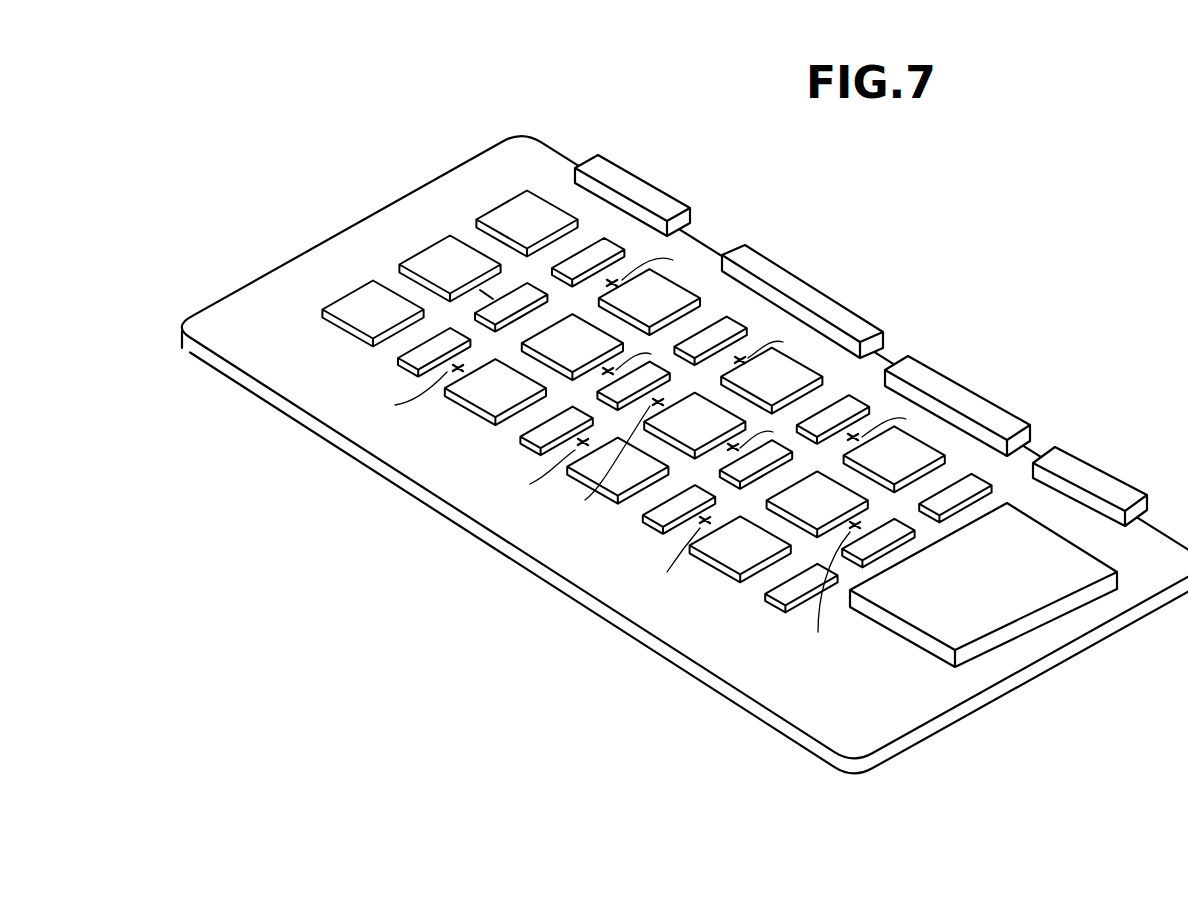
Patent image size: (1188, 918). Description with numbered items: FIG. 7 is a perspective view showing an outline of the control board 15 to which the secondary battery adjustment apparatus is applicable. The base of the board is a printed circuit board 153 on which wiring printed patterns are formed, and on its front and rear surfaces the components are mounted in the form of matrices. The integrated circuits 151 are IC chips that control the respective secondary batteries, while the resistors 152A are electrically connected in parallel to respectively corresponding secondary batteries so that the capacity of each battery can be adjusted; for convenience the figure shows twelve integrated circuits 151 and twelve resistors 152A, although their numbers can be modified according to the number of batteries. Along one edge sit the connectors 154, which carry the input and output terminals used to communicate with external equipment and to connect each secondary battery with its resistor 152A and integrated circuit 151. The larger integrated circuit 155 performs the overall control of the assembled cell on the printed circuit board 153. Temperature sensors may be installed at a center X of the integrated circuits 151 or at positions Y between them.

The control board 15 is at (1020, 291).
The integrated circuit 151 is at (508, 212).
The resistor 152A is at (447, 338).
The printed circuit board 153 is at (256, 316).
The connector 154 is at (657, 187).
The integrated circuit (IC chip) 155 is at (1013, 575).